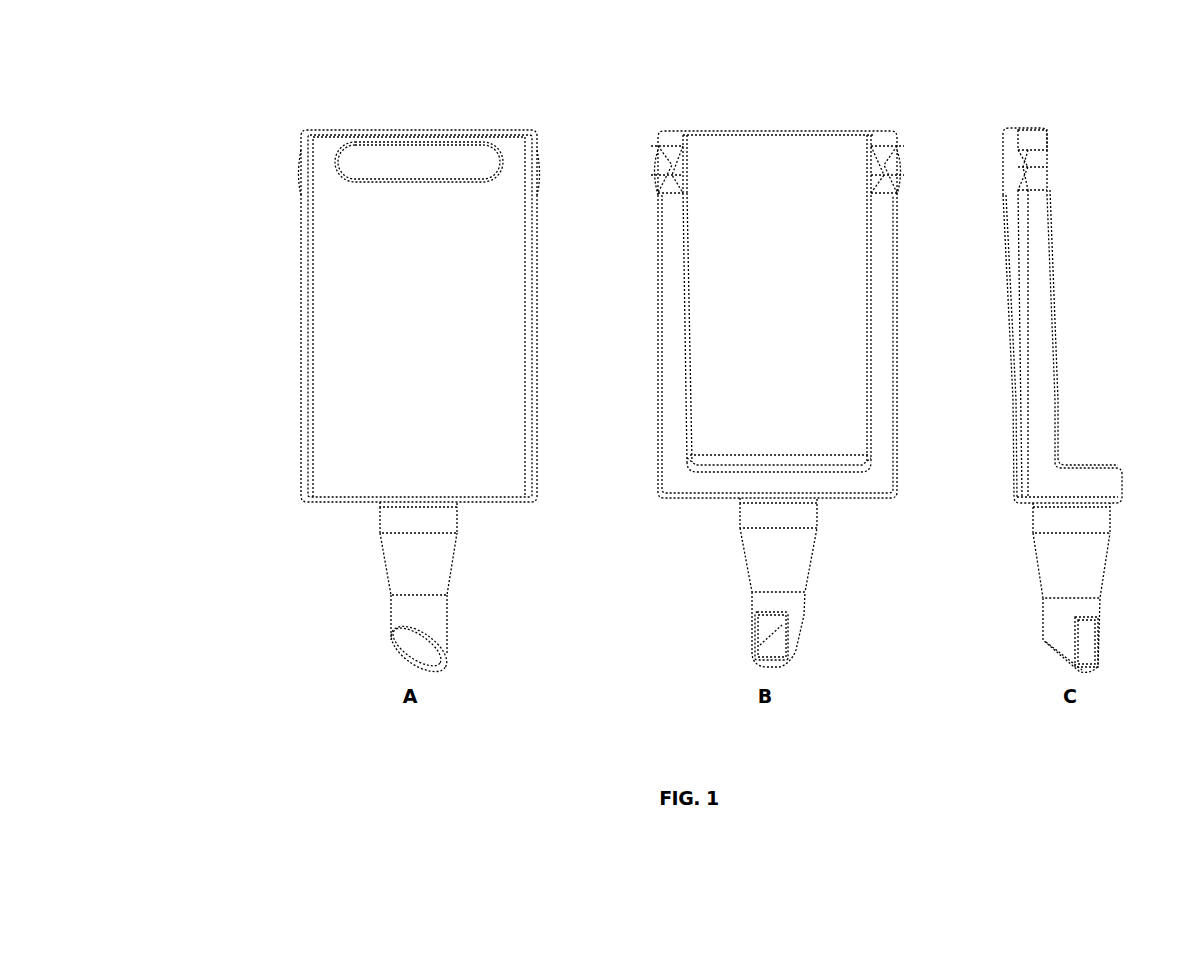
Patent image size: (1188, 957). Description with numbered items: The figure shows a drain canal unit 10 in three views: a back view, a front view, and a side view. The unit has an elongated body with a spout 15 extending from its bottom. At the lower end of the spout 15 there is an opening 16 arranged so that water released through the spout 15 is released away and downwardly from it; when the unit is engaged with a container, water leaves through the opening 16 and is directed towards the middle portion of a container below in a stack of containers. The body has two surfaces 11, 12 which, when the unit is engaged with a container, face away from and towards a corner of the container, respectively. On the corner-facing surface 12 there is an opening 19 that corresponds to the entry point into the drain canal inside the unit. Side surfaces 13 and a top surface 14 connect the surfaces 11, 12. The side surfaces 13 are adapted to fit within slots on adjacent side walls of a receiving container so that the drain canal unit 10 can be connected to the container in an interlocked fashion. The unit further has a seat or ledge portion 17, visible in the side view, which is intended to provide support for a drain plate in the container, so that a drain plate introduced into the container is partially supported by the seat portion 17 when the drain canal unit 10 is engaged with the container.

The drain canal unit 10 is at (367, 122).
The surface 11 is at (847, 315).
The surface 12 is at (459, 400).
The side surfaces 13 is at (305, 248).
The top surface 14 is at (827, 122).
The spout 15 is at (758, 562).
The opening 16 is at (777, 645).
The seat or ledge portion 17 is at (1094, 467).
The opening 19 is at (425, 160).